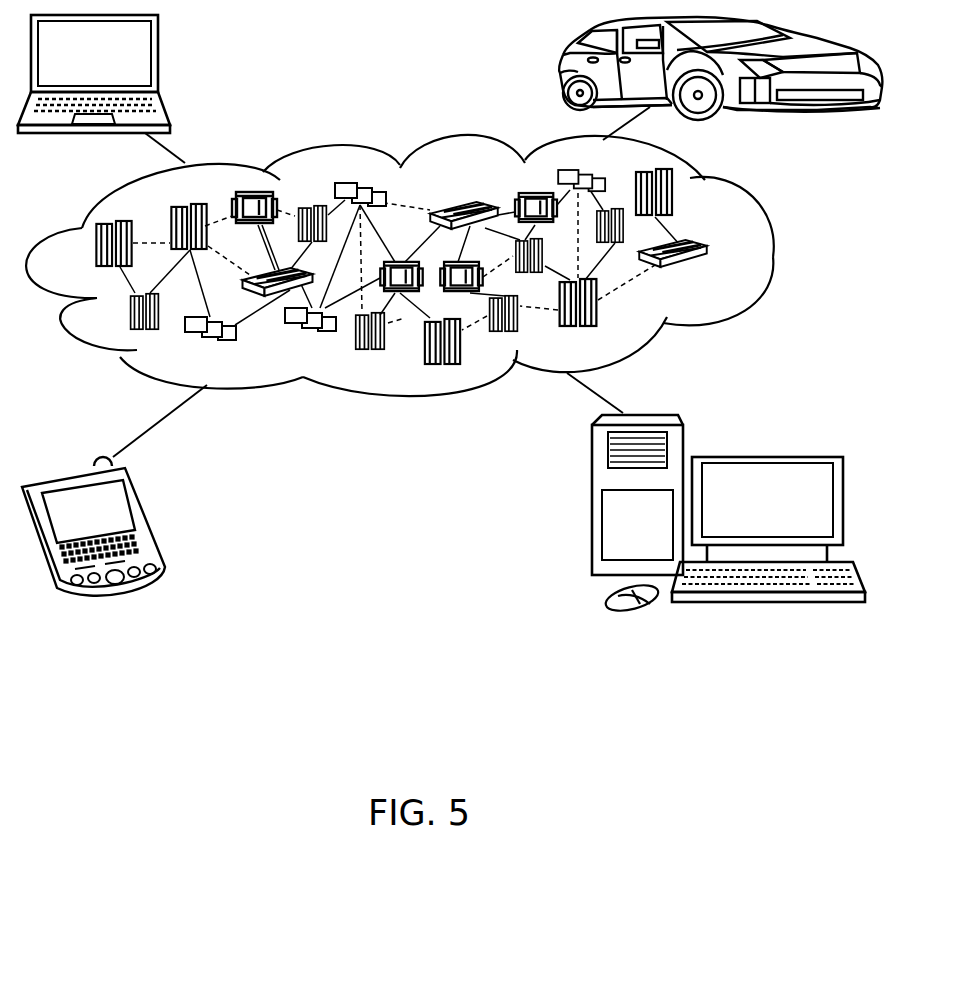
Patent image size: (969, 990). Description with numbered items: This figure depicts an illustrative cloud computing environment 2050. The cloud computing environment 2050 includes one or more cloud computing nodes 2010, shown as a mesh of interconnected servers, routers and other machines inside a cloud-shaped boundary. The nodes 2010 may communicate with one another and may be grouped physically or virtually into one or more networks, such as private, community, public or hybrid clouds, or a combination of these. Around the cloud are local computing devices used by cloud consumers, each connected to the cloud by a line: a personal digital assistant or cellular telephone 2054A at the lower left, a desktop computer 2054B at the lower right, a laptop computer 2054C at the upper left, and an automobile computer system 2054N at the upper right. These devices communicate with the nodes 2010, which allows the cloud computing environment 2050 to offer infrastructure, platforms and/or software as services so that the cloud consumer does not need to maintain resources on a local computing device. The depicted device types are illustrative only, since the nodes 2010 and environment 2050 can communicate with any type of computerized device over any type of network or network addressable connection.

The laptop computer 2054C is at (158, 60).
The automobile computer system 2054N is at (562, 68).
The cloud computing environment 2050 is at (767, 252).
The cloud computing nodes 2010 is at (716, 274).
The personal digital assistant (PDA) or cellular telephone 2054A is at (153, 517).
The desktop computer 2054B is at (773, 440).